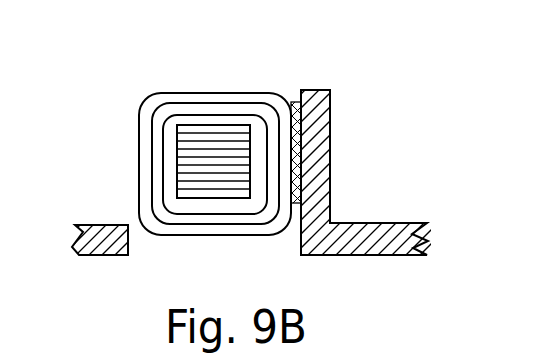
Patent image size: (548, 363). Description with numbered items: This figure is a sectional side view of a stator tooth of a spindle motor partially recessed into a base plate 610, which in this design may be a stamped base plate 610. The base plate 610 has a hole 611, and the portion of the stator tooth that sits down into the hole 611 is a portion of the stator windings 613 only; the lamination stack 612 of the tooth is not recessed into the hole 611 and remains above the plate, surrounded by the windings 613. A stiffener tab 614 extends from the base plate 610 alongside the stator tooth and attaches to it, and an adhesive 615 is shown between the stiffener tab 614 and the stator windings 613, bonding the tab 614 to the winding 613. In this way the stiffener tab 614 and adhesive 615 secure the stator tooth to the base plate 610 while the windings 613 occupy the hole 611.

The base plate 610 is at (352, 245).
The hole 611 is at (153, 250).
The lamination stack 612 is at (187, 148).
The stator windings 613 is at (208, 107).
The stiffener tab 614 is at (315, 160).
The adhesive 615 is at (300, 103).